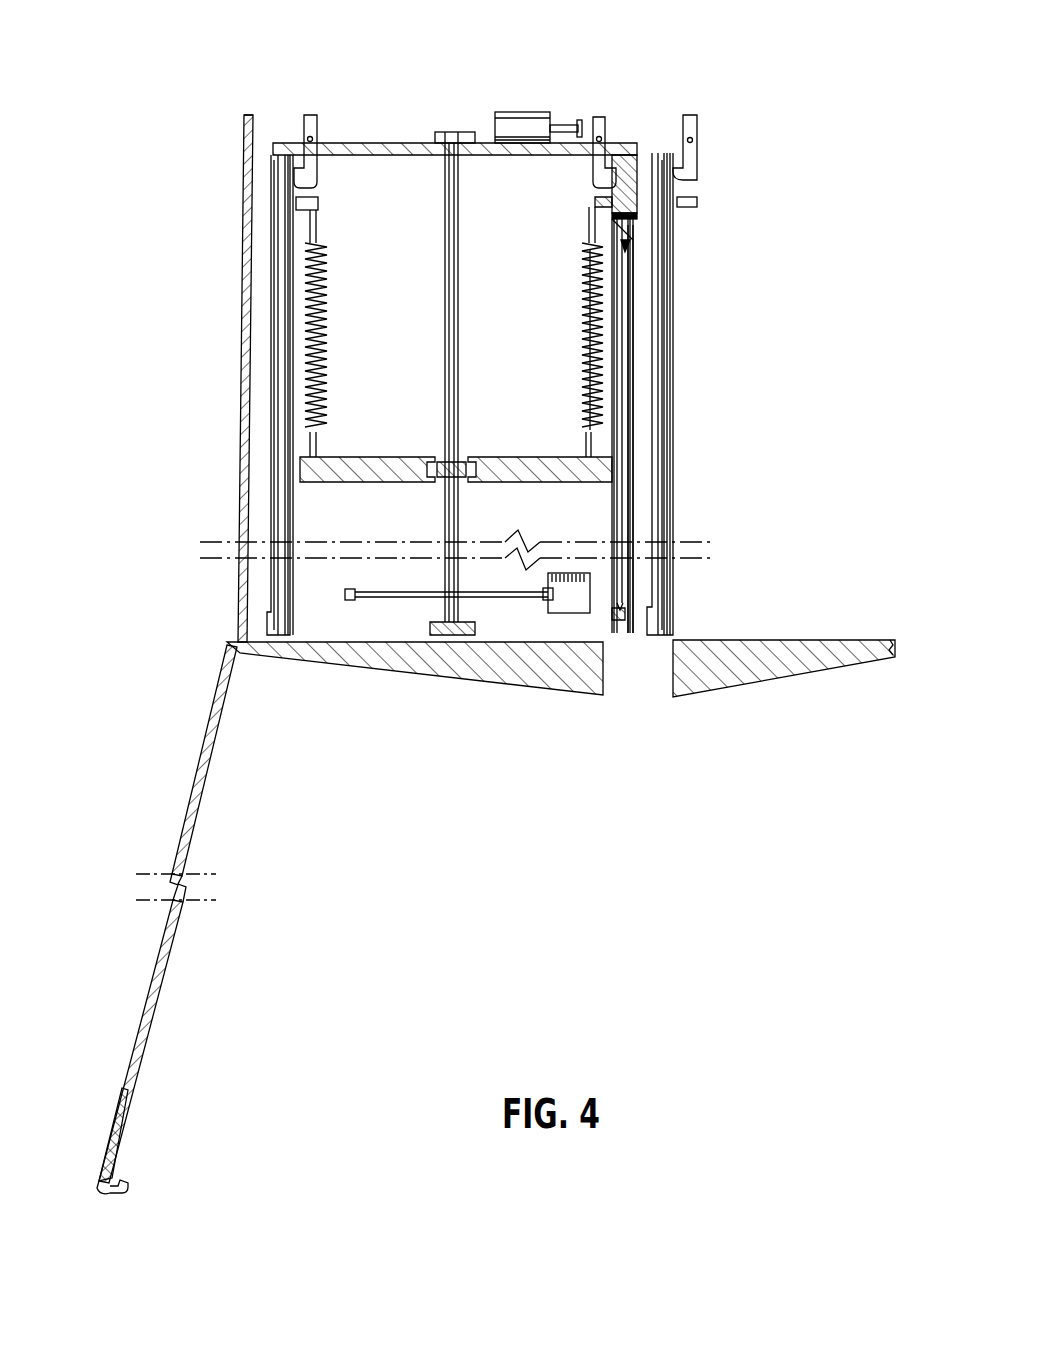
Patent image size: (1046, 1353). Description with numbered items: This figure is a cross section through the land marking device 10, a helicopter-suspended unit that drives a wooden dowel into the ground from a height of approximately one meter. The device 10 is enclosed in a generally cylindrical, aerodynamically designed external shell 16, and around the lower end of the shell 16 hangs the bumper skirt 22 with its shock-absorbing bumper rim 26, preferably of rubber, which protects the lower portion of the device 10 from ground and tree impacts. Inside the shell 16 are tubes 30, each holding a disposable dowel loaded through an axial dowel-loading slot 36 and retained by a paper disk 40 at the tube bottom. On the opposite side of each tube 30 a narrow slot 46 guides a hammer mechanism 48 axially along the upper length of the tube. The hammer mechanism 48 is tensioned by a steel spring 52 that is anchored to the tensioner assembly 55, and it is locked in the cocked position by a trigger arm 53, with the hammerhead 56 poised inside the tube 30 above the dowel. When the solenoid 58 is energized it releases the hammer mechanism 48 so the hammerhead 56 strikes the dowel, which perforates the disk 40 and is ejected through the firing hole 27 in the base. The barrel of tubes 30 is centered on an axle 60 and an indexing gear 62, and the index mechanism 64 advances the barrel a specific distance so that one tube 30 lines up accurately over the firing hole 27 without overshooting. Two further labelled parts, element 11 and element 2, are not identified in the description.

The land marking device 10 is at (250, 96).
The external shell 16 is at (243, 350).
The bumper skirt 22 is at (188, 800).
The bumper rim 26 is at (105, 1150).
The hammer mechanism 48 is at (628, 195).
The solenoid 58 is at (508, 122).
The trigger arm 53 is at (605, 120).
The dowel-loading slot 36 is at (272, 295).
The tube 30 is at (274, 442).
The axle 60 is at (448, 285).
The tensioner assembly 55 is at (368, 455).
The narrow slot 46 is at (296, 218).
The steel spring 52 is at (578, 380).
The hammerhead 56 is at (625, 232).
The slide rail 11 is at (618, 395).
The disk 40 is at (614, 635).
The guide bar 2 is at (630, 635).
The firing hole 27 is at (662, 712).
The indexing gear 62 is at (348, 602).
The index mechanism 64 is at (567, 613).